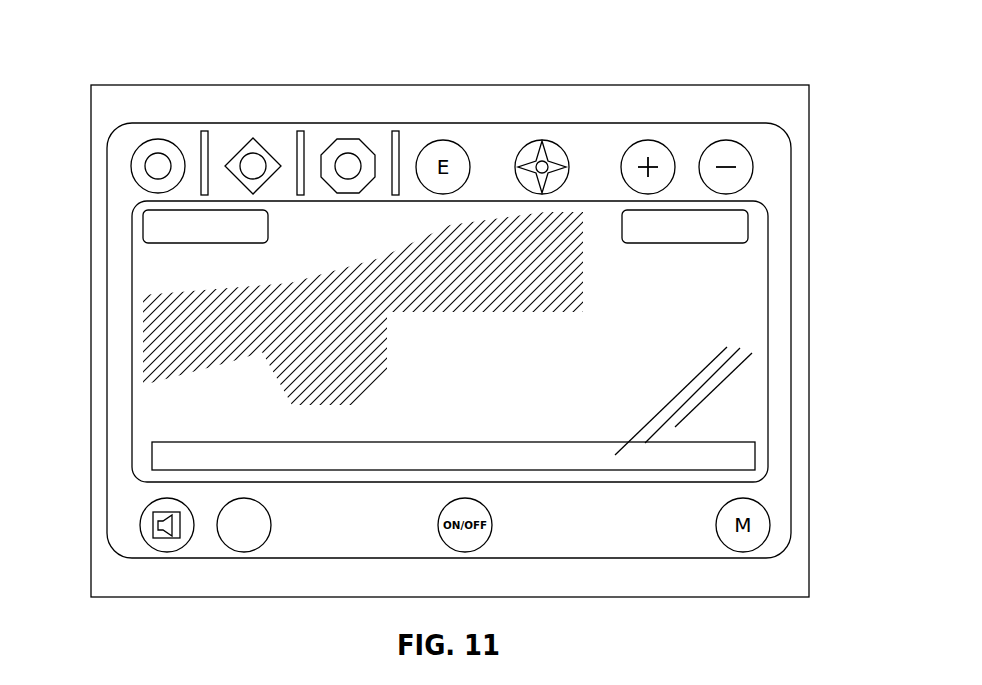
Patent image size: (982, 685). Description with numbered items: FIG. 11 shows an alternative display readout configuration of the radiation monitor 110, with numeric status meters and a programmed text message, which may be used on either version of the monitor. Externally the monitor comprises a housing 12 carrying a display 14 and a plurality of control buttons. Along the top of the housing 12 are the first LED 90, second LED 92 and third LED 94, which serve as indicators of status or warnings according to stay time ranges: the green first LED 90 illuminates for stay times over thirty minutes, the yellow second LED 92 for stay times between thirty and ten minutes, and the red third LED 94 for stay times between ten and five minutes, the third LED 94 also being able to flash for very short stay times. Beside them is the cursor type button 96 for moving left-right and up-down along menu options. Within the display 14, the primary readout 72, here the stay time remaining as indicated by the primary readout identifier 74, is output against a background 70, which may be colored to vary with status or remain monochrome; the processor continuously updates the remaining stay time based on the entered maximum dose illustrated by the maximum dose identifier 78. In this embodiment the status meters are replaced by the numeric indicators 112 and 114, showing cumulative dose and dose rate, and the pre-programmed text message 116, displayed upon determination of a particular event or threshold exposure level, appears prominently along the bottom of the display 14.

The dosimeter device 110 is at (132, 60).
The housing 12 is at (775, 493).
The display 14 is at (768, 286).
The background 70 is at (744, 335).
The primary readout 72 is at (650, 353).
The primary readout identifier 74 is at (580, 283).
The maximum dose identifier 78 is at (572, 407).
The first LED 90 is at (158, 139).
The second LED 92 is at (253, 138).
The third LED 94 is at (348, 140).
The cursor type button 96 is at (542, 140).
The numeric indicator 112 is at (268, 228).
The numeric indicator 114 is at (748, 226).
The pre-programmed text message 116 is at (227, 442).